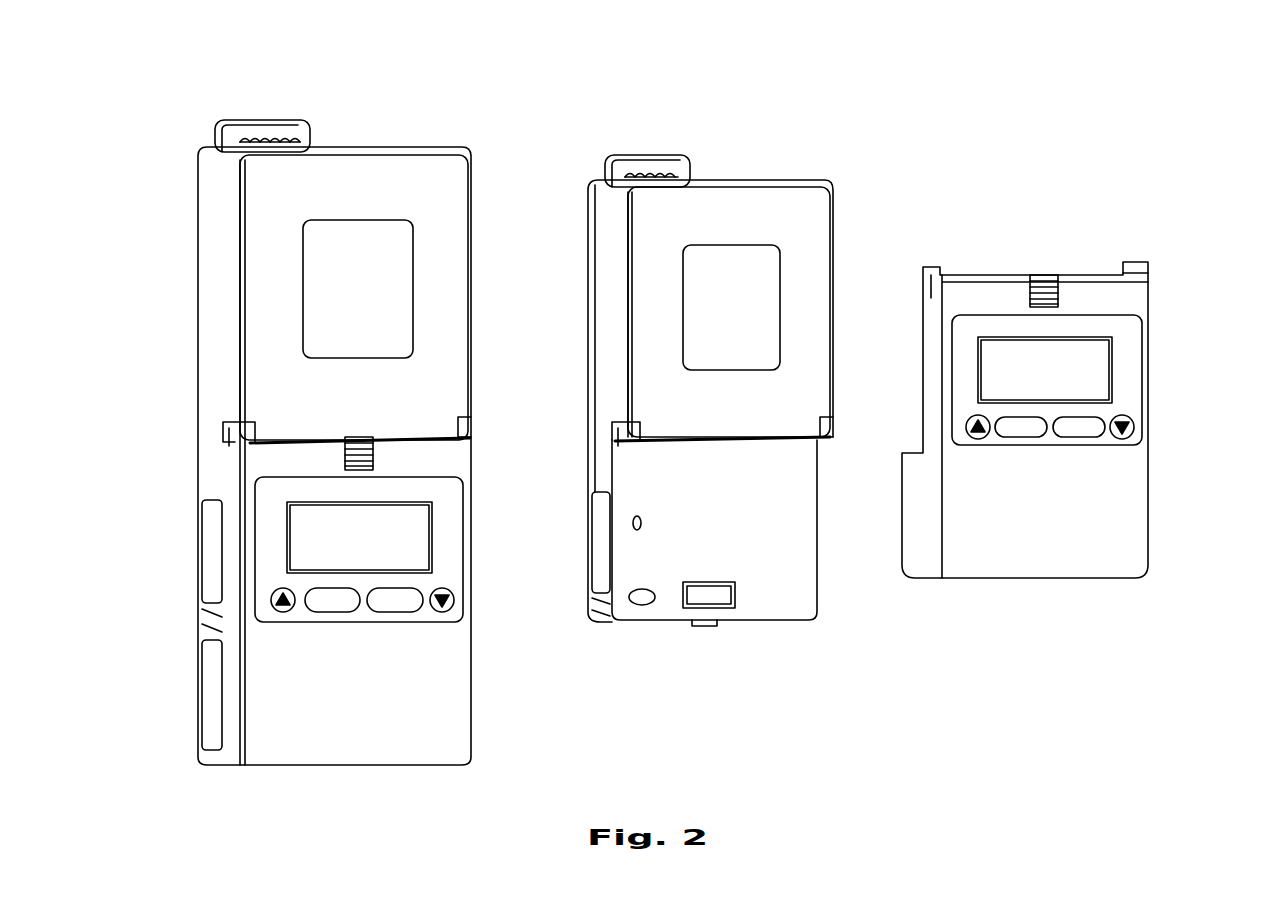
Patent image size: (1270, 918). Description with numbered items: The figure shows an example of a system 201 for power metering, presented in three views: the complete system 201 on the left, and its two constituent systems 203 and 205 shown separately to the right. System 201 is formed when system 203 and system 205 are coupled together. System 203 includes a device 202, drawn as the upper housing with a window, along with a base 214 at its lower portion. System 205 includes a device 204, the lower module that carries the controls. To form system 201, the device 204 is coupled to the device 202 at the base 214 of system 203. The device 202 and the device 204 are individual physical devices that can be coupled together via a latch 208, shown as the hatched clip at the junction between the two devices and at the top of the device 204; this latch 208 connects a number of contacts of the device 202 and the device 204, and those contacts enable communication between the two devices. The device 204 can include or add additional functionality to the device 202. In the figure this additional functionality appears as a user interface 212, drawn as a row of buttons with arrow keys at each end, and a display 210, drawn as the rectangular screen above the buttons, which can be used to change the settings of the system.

The system for power metering 201 is at (201, 101).
The device 202 is at (213, 300).
The system 203 is at (611, 101).
The device 204 is at (288, 700).
The system 205 is at (1106, 169).
The latch 208 is at (348, 452).
The display 210 is at (313, 538).
The user interface 212 is at (322, 606).
The base 214 is at (625, 478).